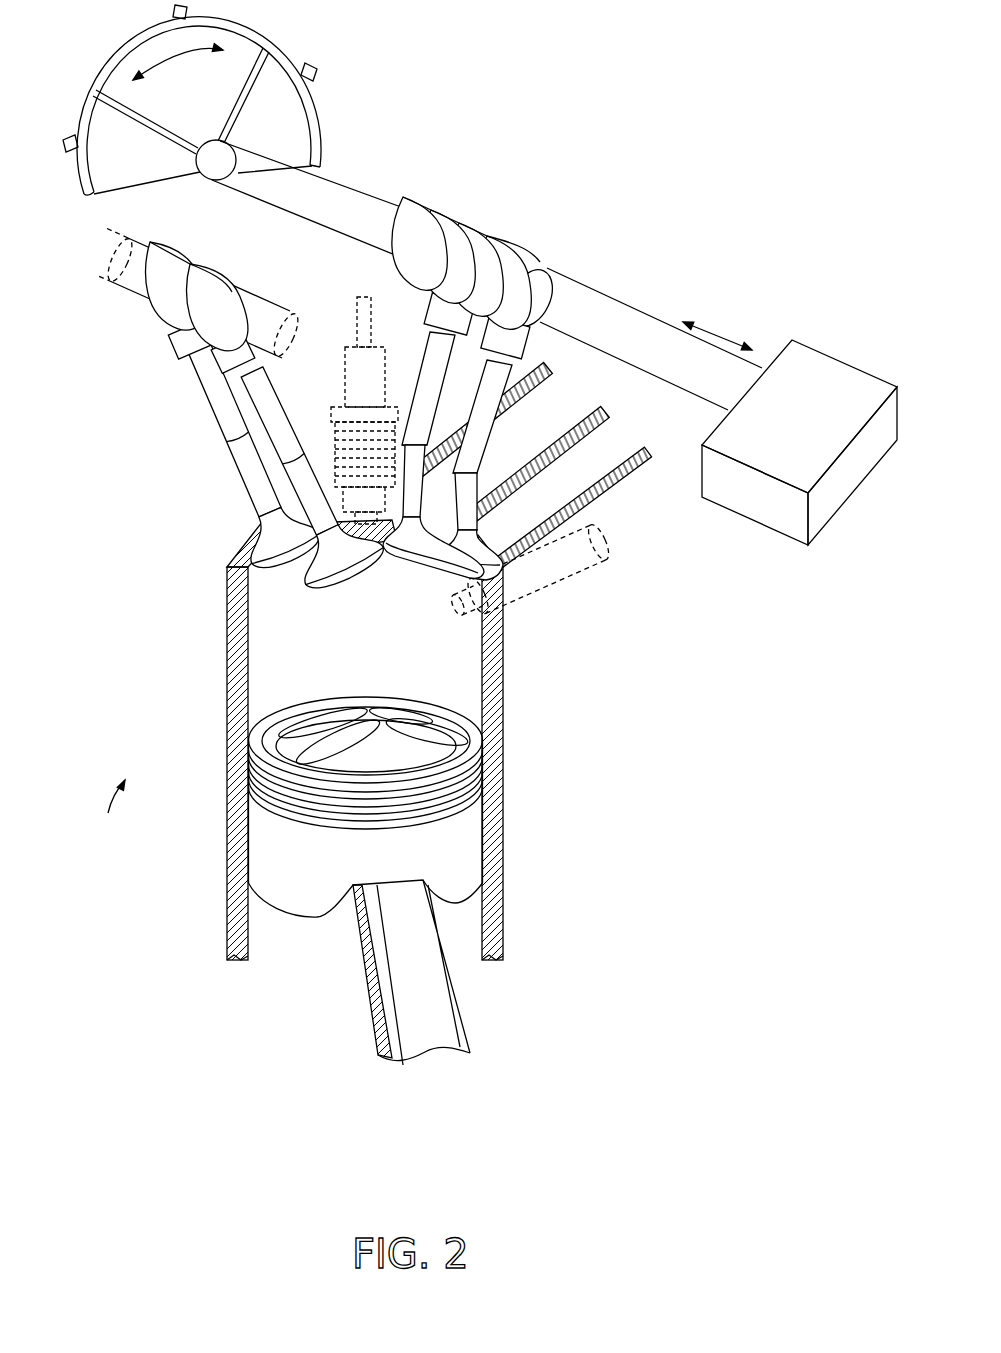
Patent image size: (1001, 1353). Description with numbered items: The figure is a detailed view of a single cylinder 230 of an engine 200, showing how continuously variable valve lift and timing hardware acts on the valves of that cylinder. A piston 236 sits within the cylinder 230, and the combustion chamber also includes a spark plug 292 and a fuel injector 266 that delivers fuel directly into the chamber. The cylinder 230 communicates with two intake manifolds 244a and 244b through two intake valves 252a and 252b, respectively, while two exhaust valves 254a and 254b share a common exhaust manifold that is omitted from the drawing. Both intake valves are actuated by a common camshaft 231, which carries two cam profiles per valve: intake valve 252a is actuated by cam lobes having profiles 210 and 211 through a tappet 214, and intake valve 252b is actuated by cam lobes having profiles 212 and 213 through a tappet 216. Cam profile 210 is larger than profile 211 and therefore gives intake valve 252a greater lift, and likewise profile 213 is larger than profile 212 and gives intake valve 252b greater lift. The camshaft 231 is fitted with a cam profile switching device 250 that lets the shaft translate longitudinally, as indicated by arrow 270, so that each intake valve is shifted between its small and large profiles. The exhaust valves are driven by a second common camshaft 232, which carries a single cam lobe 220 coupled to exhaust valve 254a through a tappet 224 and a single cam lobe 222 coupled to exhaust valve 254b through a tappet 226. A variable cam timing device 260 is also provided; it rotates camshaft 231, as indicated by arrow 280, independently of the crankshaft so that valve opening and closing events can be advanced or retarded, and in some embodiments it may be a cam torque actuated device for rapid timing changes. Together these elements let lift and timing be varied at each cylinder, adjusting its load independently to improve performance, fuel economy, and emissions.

The engine 200 is at (104, 813).
The cam profile 210 is at (516, 244).
The cam profile 211 is at (484, 236).
The cam profile 212 is at (458, 234).
The cam profile 213 is at (413, 214).
The tappet 214 is at (514, 351).
The tappet 216 is at (391, 258).
The cam lobe 220 is at (210, 276).
The cam lobe 222 is at (176, 246).
The tappet 224 is at (212, 387).
The tappet 226 is at (180, 342).
The cylinder 230 is at (374, 663).
The camshaft 231 is at (609, 305).
The camshaft 232 is at (118, 255).
The piston 236 is at (260, 840).
The intake manifold 244a is at (601, 478).
The intake manifold 244b is at (594, 403).
The cam profile switching device 250 is at (823, 350).
The intake valve 252a is at (494, 401).
The intake valve 252b is at (474, 448).
The exhaust valve 254a is at (258, 535).
The exhaust valve 254b is at (246, 479).
The variable cam timing device 260 is at (283, 45).
The fuel injector 266 is at (604, 554).
The arrow 270 is at (712, 331).
The arrow 280 is at (200, 53).
The spark plug 292 is at (376, 350).